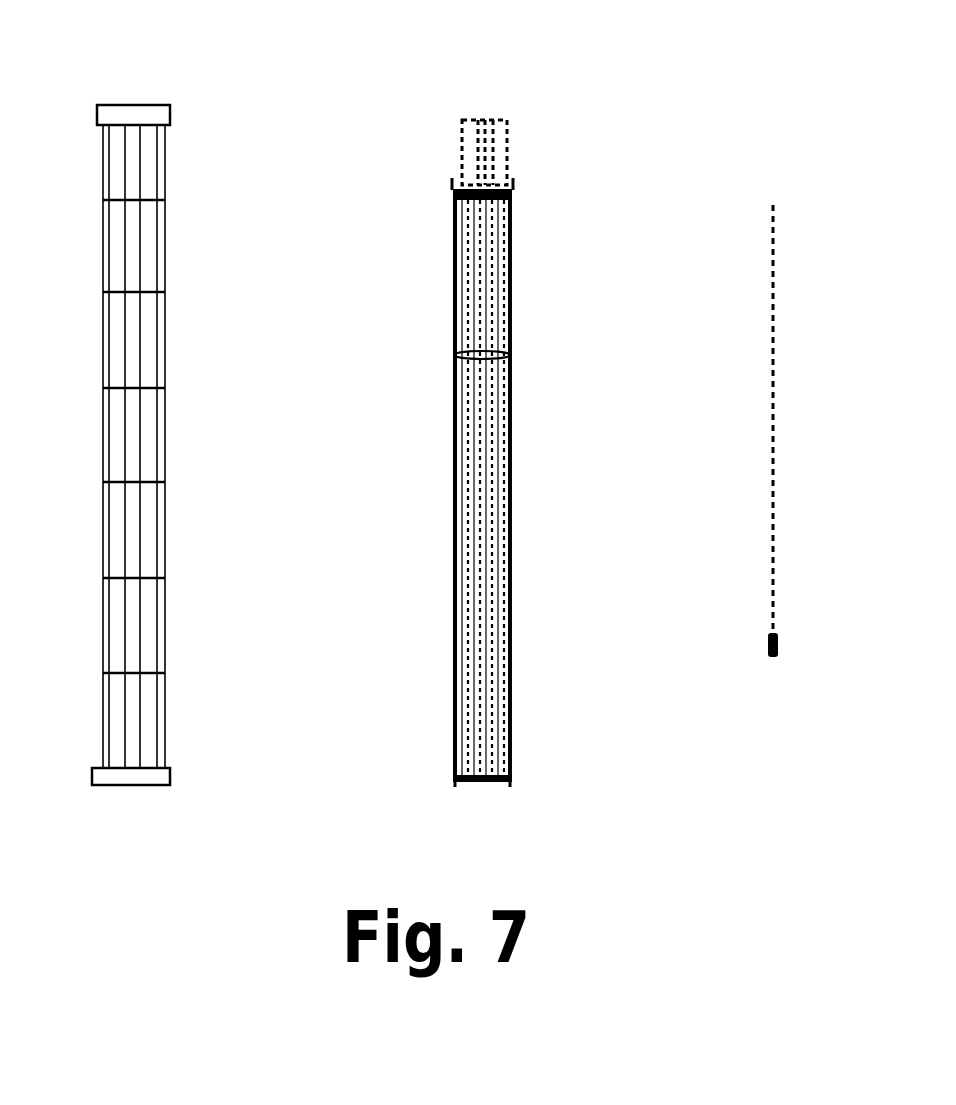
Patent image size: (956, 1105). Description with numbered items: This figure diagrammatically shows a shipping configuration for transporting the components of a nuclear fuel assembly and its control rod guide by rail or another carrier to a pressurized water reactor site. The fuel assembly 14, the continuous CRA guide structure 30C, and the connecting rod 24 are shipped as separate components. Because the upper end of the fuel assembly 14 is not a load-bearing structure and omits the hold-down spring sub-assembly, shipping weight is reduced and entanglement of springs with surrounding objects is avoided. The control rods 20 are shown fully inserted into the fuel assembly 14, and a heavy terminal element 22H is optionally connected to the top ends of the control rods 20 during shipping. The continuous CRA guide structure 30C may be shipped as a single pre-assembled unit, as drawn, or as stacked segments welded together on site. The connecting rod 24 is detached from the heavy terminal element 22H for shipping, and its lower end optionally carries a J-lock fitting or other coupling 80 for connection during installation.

The continuous CRA guide structure 30C is at (164, 237).
The fuel assembly 14 is at (513, 612).
The heavy terminal element 22H is at (466, 153).
The control rods 20 is at (454, 355).
The connecting rod 24 is at (773, 360).
The coupling 80 is at (745, 626).